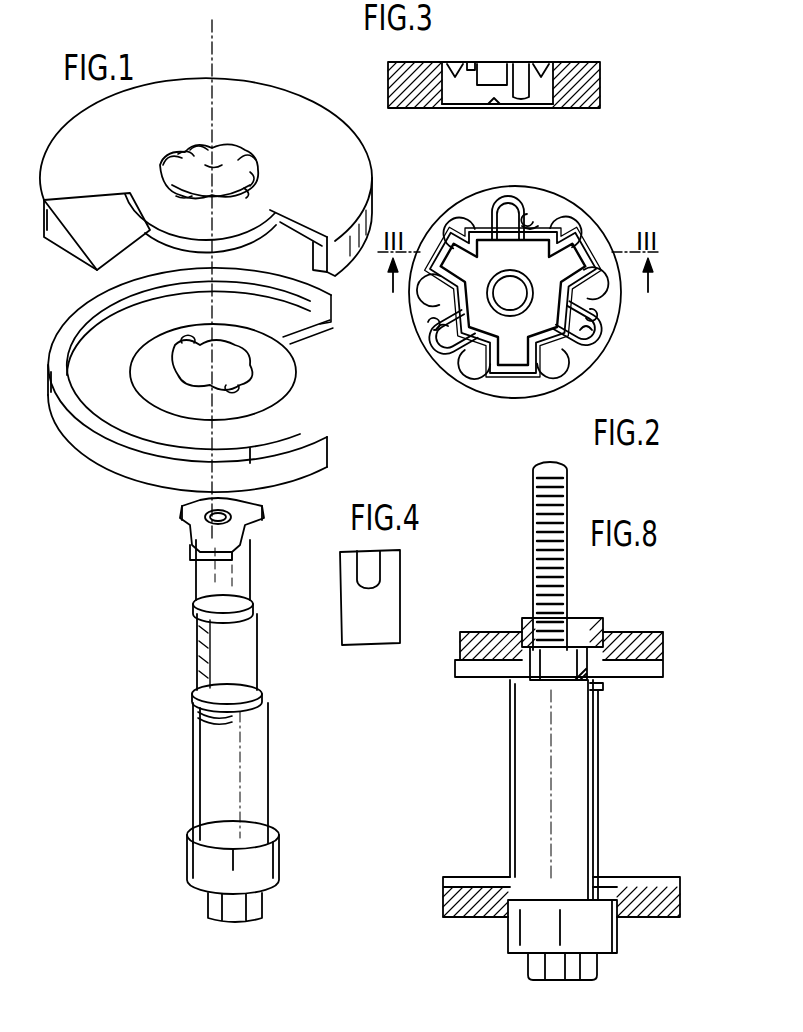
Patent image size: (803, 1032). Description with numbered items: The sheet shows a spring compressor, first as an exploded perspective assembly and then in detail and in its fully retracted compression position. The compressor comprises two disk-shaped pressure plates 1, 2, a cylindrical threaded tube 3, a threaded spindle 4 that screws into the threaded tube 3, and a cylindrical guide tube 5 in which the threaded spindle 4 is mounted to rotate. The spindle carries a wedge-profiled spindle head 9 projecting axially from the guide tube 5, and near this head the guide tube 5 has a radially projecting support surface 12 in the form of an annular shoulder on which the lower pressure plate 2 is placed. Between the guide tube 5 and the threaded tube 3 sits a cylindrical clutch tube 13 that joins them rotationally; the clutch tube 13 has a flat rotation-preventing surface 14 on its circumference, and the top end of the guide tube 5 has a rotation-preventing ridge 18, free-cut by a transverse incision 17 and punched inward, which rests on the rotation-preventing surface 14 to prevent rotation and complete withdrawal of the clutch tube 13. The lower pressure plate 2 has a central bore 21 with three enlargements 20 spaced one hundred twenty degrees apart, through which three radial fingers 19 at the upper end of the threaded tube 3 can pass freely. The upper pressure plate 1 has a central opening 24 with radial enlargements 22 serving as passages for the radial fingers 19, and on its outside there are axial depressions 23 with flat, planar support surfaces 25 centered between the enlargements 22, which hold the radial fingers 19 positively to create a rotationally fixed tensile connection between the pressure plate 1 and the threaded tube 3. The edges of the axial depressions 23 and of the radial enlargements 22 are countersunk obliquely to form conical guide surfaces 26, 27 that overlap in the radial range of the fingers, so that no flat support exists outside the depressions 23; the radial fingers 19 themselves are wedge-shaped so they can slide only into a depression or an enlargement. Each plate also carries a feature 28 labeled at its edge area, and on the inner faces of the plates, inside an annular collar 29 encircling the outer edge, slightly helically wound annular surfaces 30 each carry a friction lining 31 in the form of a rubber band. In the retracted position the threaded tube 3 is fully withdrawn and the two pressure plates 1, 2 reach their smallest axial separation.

In FIG. 1, the pressure plate 1 is at (283, 100).
In FIG. 3, the pressure plate 1 is at (593, 70).
In FIG. 8, the pressure plate 1 is at (487, 648).
In FIG. 1, the pressure plate 2 is at (98, 463).
In FIG. 8, the pressure plate 2 is at (472, 910).
In FIG. 1, the threaded tube 3 is at (203, 582).
In FIG. 2, the threaded tube 3 is at (530, 320).
In FIG. 8, the threaded tube 3 is at (573, 655).
In FIG. 8, the threaded spindle 4 is at (540, 492).
In FIG. 1, the guide tube 5 is at (253, 753).
In FIG. 8, the guide tube 5 is at (515, 741).
In FIG. 1, the spindle head 9 is at (263, 906).
In FIG. 8, the spindle head 9 is at (590, 966).
In FIG. 1, the support surface 12 is at (275, 826).
In FIG. 8, the support surface 12 is at (610, 888).
In FIG. 1, the clutch tube 13 is at (223, 633).
In FIG. 8, the clutch tube 13 is at (549, 669).
In FIG. 1, the rotation-preventing surface 14 is at (202, 665).
In FIG. 1, the transverse incision 17 is at (227, 722).
In FIG. 1, the rotation-preventing ridge 18 is at (200, 703).
In FIG. 8, the rotation-preventing ridge 18 is at (600, 691).
In FIG. 1, the radial fingers 19 is at (198, 504).
In FIG. 2, the radial fingers 19 is at (513, 373).
In FIG. 4, the radial fingers 19 is at (372, 573).
In FIG. 8, the radial fingers 19 is at (592, 618).
In FIG. 1, the enlargements 20 is at (230, 338).
In FIG. 1, the central bore 21 is at (250, 371).
In FIG. 1, the radial enlargements 22 is at (163, 163).
In FIG. 3, the radial enlargements 22 is at (447, 62).
In FIG. 2, the radial enlargements 22 is at (440, 241).
In FIG. 1, the axial depressions 23 is at (197, 150).
In FIG. 3, the axial depressions 23 is at (543, 64).
In FIG. 2, the axial depressions 23 is at (530, 224).
In FIG. 1, the opening 24 is at (218, 187).
In FIG. 1, the support surfaces 25 is at (187, 148).
In FIG. 3, the support surfaces 25 is at (494, 80).
In FIG. 2, the support surfaces 25 is at (500, 217).
In FIG. 3, the conical guide surfaces 26 is at (455, 62).
In FIG. 2, the conical guide surfaces 26 is at (463, 227).
In FIG. 3, the conical guide surfaces 27 is at (475, 67).
In FIG. 2, the conical guide surfaces 27 is at (532, 222).
In FIG. 1, the slot / chamfer face 28 is at (130, 237).
In FIG. 1, the annular collar 29 is at (340, 257).
In FIG. 1, the annular surfaces 30 is at (313, 233).
In FIG. 1, the friction lining 31 is at (300, 242).